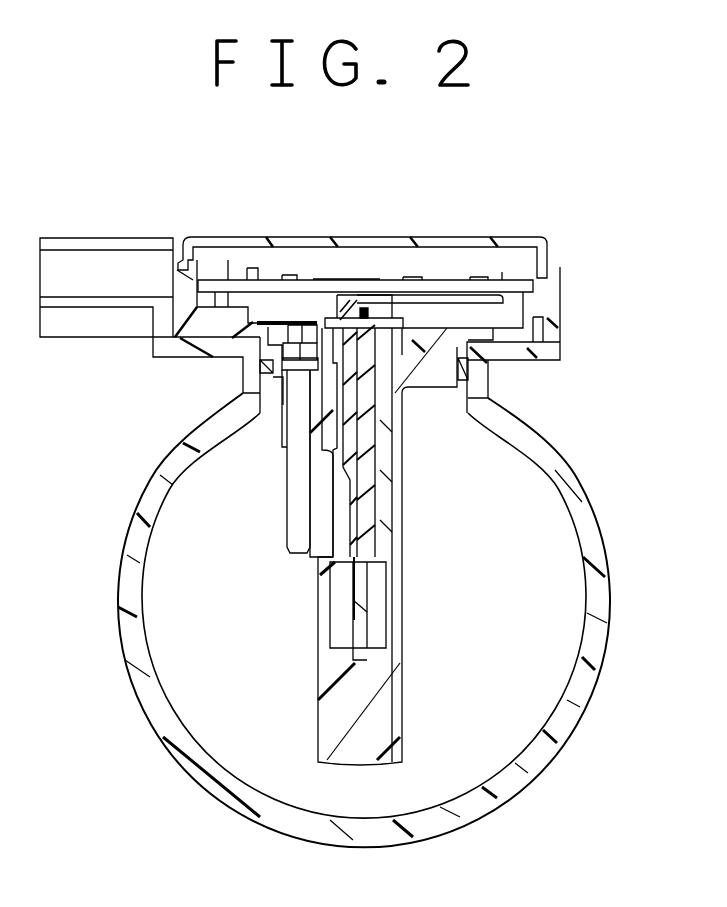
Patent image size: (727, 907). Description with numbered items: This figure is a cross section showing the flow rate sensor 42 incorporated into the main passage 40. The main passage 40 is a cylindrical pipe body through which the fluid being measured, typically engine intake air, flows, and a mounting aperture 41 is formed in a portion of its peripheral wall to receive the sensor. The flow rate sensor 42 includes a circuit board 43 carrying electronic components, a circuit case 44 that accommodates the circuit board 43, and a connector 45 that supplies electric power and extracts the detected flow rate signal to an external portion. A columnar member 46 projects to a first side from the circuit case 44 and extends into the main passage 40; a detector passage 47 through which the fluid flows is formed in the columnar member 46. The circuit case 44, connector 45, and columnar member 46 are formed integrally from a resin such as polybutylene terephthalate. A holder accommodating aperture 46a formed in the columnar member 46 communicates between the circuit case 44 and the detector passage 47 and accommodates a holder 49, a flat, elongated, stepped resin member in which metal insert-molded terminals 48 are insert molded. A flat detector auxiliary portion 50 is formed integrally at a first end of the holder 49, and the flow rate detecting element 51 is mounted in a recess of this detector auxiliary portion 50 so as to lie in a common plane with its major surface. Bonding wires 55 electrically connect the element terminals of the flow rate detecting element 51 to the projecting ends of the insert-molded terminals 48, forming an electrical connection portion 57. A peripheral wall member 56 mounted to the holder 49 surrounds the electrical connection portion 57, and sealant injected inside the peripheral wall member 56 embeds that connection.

The main passage 40 is at (570, 470).
The mounting aperture 41 is at (483, 372).
The flow rate sensor 42 is at (553, 243).
The circuit board 43 is at (445, 287).
The circuit case 44 is at (552, 290).
The connector 45 is at (72, 327).
The columnar member 46 is at (410, 446).
The holder accommodating aperture 46a is at (387, 497).
The detector passage 47 is at (382, 633).
The insert-molded terminals 48 is at (360, 445).
The holder 49 is at (380, 419).
The detector auxiliary portion 50 is at (355, 625).
The flow rate detecting element 51 is at (350, 592).
The bonding wires 55 is at (308, 522).
The peripheral wall member 56 is at (352, 472).
The electrical connection portion 57 is at (347, 500).